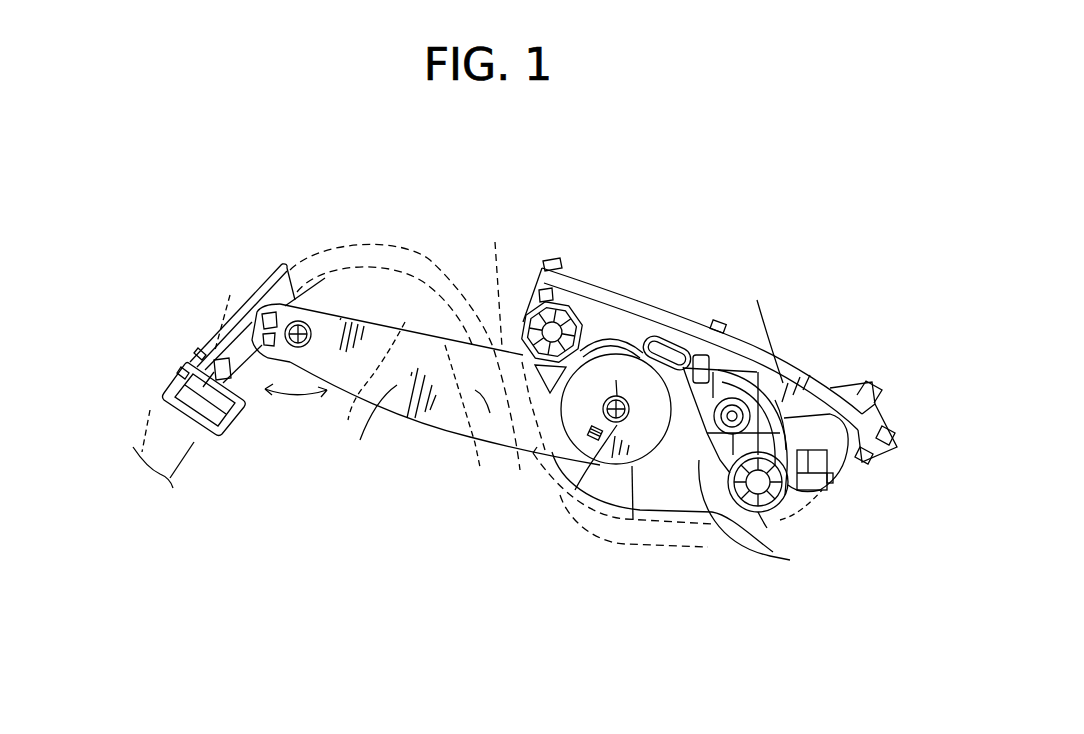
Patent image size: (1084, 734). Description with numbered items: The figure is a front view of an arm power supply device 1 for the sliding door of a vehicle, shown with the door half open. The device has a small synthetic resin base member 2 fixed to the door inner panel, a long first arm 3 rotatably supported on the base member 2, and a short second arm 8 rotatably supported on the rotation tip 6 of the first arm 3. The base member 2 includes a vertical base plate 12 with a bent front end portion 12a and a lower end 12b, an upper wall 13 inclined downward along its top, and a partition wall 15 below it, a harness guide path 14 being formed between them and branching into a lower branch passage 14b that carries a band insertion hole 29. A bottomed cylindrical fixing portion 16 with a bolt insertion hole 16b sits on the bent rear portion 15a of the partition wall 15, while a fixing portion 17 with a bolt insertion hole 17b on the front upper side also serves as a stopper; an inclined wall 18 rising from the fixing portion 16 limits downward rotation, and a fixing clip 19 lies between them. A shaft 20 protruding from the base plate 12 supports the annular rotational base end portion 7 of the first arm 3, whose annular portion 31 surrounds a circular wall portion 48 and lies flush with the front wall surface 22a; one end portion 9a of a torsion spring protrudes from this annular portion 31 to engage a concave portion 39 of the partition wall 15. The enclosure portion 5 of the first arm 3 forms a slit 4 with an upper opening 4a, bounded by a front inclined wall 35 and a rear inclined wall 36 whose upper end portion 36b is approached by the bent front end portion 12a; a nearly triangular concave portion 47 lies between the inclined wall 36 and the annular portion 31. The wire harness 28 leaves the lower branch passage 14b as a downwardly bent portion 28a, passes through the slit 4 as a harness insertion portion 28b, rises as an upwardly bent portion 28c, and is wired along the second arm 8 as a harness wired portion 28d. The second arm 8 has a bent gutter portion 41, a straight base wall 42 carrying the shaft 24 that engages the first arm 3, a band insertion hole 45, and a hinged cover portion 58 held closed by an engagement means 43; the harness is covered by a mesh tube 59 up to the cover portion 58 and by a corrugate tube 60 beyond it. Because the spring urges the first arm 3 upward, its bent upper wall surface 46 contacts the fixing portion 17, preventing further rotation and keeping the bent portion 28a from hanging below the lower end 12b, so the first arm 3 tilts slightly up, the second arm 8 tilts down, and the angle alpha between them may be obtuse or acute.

The arm power supply device 1 is at (797, 225).
The base member 2 is at (781, 327).
The first arm 3 is at (443, 447).
The slit 4 is at (418, 423).
The upper opening 4a is at (445, 345).
The enclosure portion 5 is at (403, 425).
The rotation tip 6 is at (294, 365).
The rotational base end portion 7 is at (617, 396).
The second arm 8 is at (214, 316).
The end portion of spring member 9a is at (672, 392).
The base plate 12 is at (667, 475).
The front end portion of base plate 12a is at (523, 468).
The lower end of base member 12b is at (737, 517).
The upper wall 13 is at (680, 292).
The harness guide path 14 is at (693, 323).
The lower branch passage 14b is at (813, 487).
The partition wall 15 is at (752, 400).
The bent rear portion of partition wall 15a is at (790, 400).
The fixing portion 16 is at (780, 512).
The bolt insertion hole 16b is at (760, 513).
The fixing portion 17 is at (522, 362).
The bolt insertion hole 17b is at (553, 330).
The inclined wall 18 is at (707, 498).
The fixing clip 19 is at (787, 372).
The shaft 20 is at (622, 396).
The wall surface 22a is at (363, 422).
The shaft 24 is at (301, 321).
The wire harness 28 is at (592, 540).
The downwardly bent portion 28a is at (648, 545).
The harness insertion portion 28b is at (473, 347).
The upwardly bent portion 28c is at (407, 262).
The harness wired portion 28d is at (230, 295).
The band insertion hole 29 is at (837, 482).
The annular portion 31 is at (633, 466).
The inclined wall 35 is at (399, 345).
The inclined wall 36 is at (545, 492).
The end portion of inclined wall 36b is at (495, 282).
The concave portion 39 is at (733, 398).
The gutter portion 41 is at (257, 284).
The base wall 42 is at (245, 386).
The engagement means 43 is at (231, 436).
The band insertion hole 45 is at (199, 350).
The bent upper wall surface 46 is at (608, 352).
The concave portion 47 is at (543, 258).
The circular wall portion 48 is at (575, 490).
The cover portion 58 is at (180, 381).
The mesh tube 59 is at (180, 368).
The corrugate tube 60 is at (147, 443).
The angle alpha is at (333, 417).